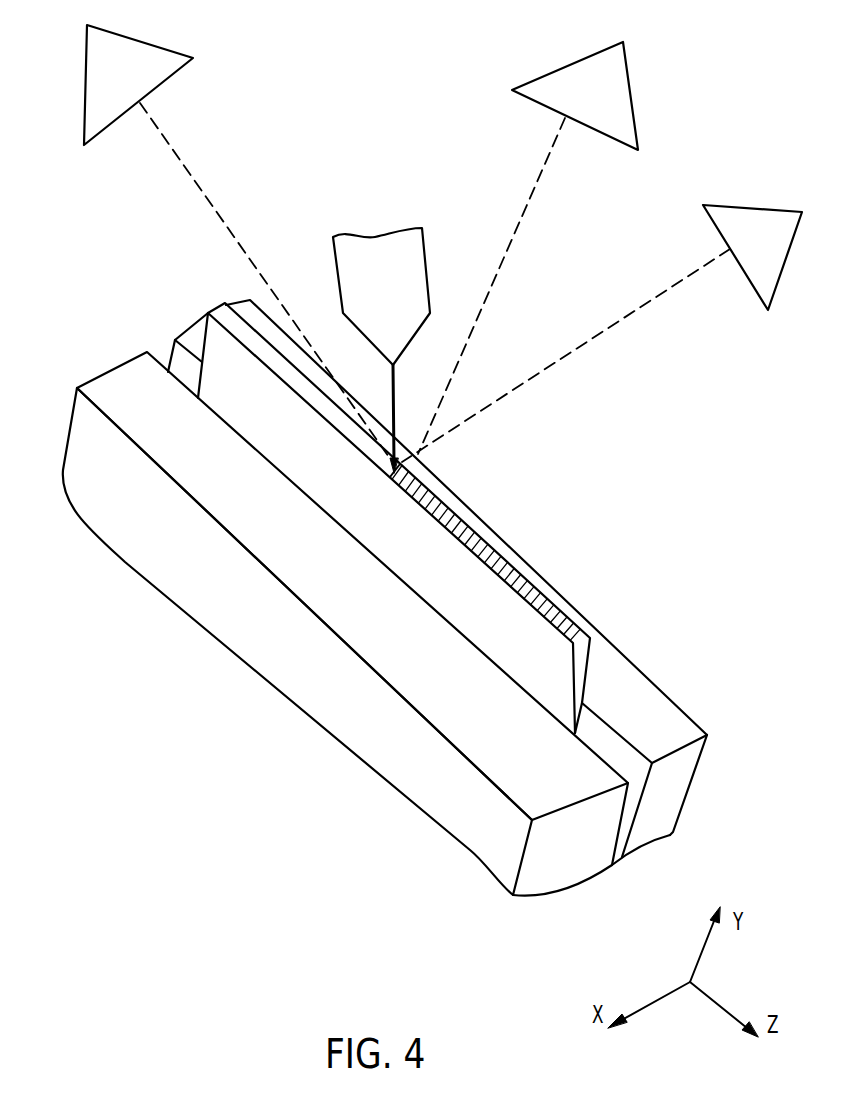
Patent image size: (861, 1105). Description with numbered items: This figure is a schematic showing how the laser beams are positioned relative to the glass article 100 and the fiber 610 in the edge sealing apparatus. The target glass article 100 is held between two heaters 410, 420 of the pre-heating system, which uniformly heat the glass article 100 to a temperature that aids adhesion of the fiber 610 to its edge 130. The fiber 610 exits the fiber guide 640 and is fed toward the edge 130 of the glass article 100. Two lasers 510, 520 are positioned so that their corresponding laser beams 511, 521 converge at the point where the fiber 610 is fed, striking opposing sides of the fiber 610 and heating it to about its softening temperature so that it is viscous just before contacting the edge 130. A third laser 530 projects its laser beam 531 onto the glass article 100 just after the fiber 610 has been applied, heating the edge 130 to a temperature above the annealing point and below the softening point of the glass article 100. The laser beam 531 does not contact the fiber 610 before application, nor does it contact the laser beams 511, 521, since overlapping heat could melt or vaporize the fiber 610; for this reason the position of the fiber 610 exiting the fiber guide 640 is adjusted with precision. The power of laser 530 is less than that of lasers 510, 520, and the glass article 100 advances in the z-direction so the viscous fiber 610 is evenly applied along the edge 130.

The glass article 100 is at (379, 518).
The edge 130 is at (545, 600).
The heater 410 is at (345, 624).
The heater 420 is at (643, 672).
The laser 510 is at (95, 88).
The laser beam 511 is at (250, 263).
The laser 520 is at (777, 265).
The laser beam 521 is at (597, 338).
The laser 530 is at (568, 73).
The laser beam 531 is at (500, 268).
The fiber 610 is at (397, 415).
The fiber guide 640 is at (405, 232).